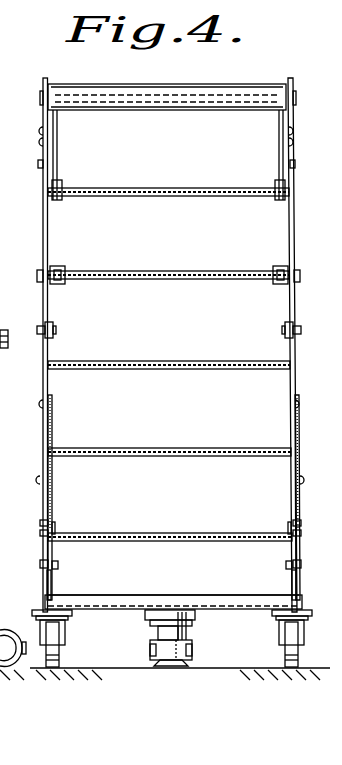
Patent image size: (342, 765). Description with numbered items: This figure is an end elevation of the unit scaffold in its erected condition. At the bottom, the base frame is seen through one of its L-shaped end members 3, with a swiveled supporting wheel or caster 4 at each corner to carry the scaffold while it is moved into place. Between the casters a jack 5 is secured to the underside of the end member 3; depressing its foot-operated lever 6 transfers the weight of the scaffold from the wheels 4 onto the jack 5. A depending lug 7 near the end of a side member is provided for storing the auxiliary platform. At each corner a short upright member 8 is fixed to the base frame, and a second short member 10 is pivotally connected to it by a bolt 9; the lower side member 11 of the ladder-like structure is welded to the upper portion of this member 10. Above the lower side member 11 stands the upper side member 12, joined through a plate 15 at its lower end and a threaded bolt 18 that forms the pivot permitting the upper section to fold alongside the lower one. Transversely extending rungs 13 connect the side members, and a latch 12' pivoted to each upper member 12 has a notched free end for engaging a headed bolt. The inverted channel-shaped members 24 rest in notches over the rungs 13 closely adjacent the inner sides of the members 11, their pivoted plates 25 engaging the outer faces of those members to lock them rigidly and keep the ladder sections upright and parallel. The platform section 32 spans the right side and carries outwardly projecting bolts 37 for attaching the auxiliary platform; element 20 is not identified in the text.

The end member 3 is at (220, 597).
The supporting wheel or caster 4 is at (60, 662).
The jack 5 is at (160, 630).
The foot-operated lever 6 is at (192, 649).
The depending lug 7 is at (150, 596).
The upright member 8 is at (52, 584).
The bolt 9 is at (58, 564).
The second relatively short member 10 is at (44, 552).
The lower parallel side member 11 is at (52, 425).
The upper parallel side member 12 is at (170, 345).
The latch 12' is at (148, 155).
The rung 13 is at (233, 102).
The plate 15 is at (0, 321).
The threaded bolt 18 is at (37, 329).
The slide clamp 20 is at (44, 479).
The member 24 is at (66, 269).
The pivoted plate 25 is at (38, 272).
The platform section 32 is at (190, 84).
The bolt 37 is at (40, 96).